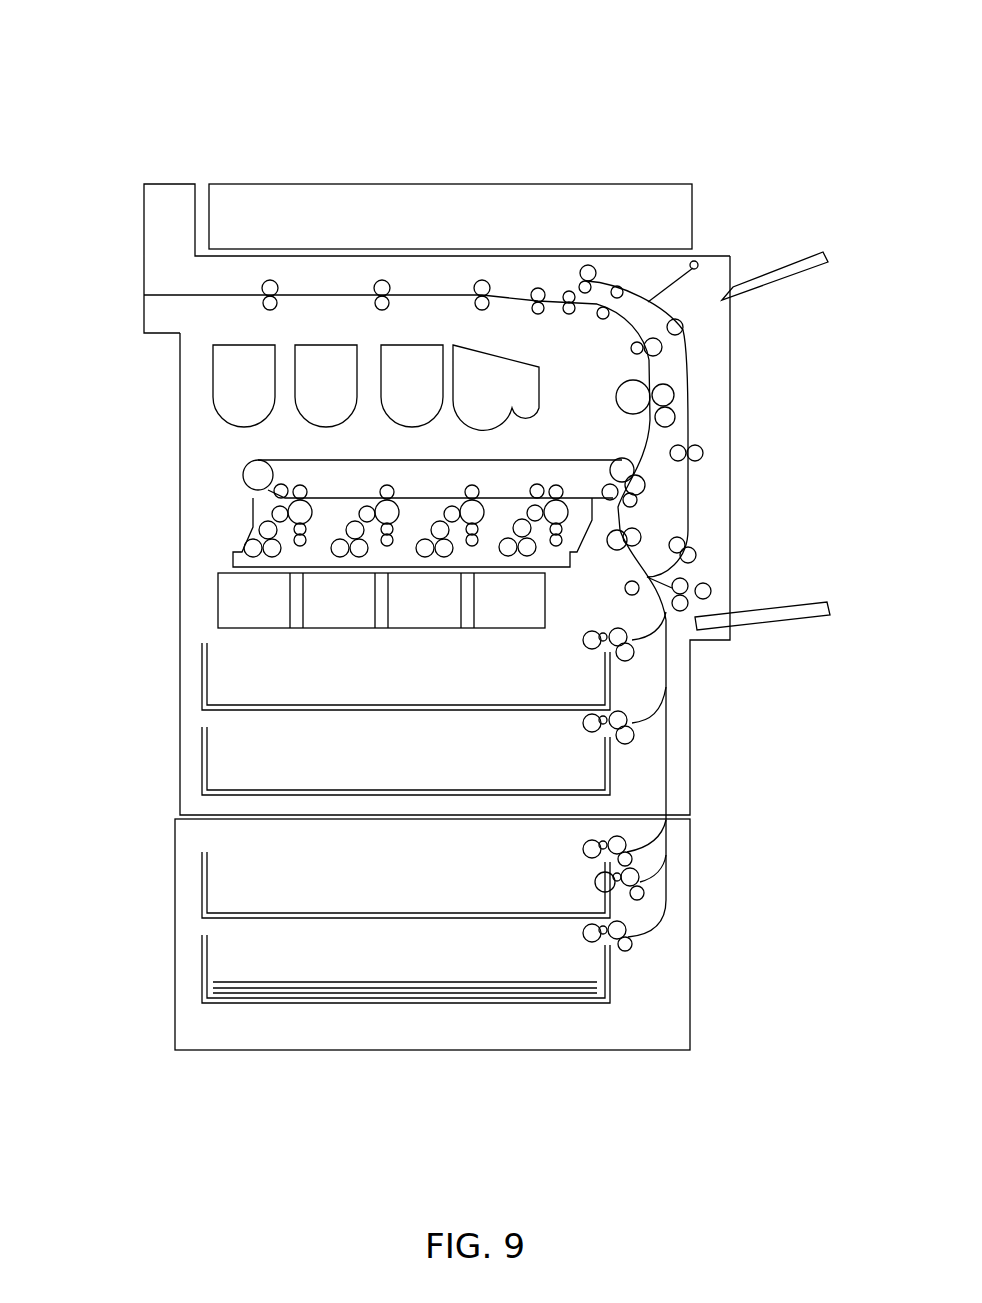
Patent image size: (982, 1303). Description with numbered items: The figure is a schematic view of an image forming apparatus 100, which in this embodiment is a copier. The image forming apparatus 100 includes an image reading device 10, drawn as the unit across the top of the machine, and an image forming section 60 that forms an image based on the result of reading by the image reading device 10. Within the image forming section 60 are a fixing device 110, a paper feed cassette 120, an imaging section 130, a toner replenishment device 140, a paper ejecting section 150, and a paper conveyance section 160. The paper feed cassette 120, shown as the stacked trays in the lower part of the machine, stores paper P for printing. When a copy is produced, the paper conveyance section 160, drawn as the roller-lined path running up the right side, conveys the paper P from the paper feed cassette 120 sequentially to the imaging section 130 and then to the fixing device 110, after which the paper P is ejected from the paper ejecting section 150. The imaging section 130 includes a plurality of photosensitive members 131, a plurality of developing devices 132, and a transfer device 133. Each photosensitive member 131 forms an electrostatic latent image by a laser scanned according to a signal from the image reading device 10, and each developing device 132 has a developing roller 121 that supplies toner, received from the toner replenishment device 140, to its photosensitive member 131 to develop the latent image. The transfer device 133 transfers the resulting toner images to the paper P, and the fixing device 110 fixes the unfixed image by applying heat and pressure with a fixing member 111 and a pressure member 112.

The image forming apparatus 100 is at (581, 94).
The image reading device 10 is at (603, 180).
The paper ejecting section 150 is at (160, 240).
The image forming section 60 is at (778, 518).
The paper conveyance section 160 is at (340, 272).
The toner replenishment device 140 is at (205, 418).
The imaging section 130 is at (344, 507).
The transfer device 133 is at (235, 477).
The developing device 132 is at (240, 535).
The photosensitive member 131 is at (312, 505).
The developing roller 121 is at (272, 513).
The fixing device 110 is at (615, 412).
The fixing member 111 is at (636, 414).
The pressure member 112 is at (670, 395).
The paper feed cassette 120 is at (192, 765).
The paper P is at (250, 993).